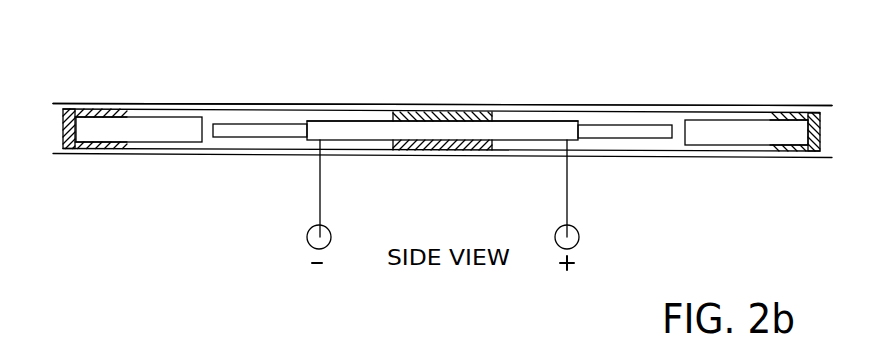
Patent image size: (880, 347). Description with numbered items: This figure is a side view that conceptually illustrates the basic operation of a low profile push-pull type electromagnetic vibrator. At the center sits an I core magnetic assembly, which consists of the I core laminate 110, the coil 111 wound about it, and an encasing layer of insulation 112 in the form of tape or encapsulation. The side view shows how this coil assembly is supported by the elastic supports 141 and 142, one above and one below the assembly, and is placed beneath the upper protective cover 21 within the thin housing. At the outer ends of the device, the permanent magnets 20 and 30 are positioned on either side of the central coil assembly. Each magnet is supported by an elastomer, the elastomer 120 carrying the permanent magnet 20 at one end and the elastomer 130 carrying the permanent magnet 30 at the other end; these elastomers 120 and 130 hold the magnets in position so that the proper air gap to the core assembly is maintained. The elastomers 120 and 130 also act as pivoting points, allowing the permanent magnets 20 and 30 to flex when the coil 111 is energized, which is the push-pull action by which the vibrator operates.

The permanent magnet 20 is at (168, 127).
The upper protective cover 21 is at (285, 108).
The permanent magnet 30 is at (727, 130).
The I core laminate 110 is at (243, 127).
The coil 111 is at (358, 128).
The insulation 112 is at (535, 121).
The elastomer 120 is at (83, 146).
The elastomer 130 is at (791, 113).
The elastic support 141 is at (427, 114).
The elastic support 142 is at (430, 150).